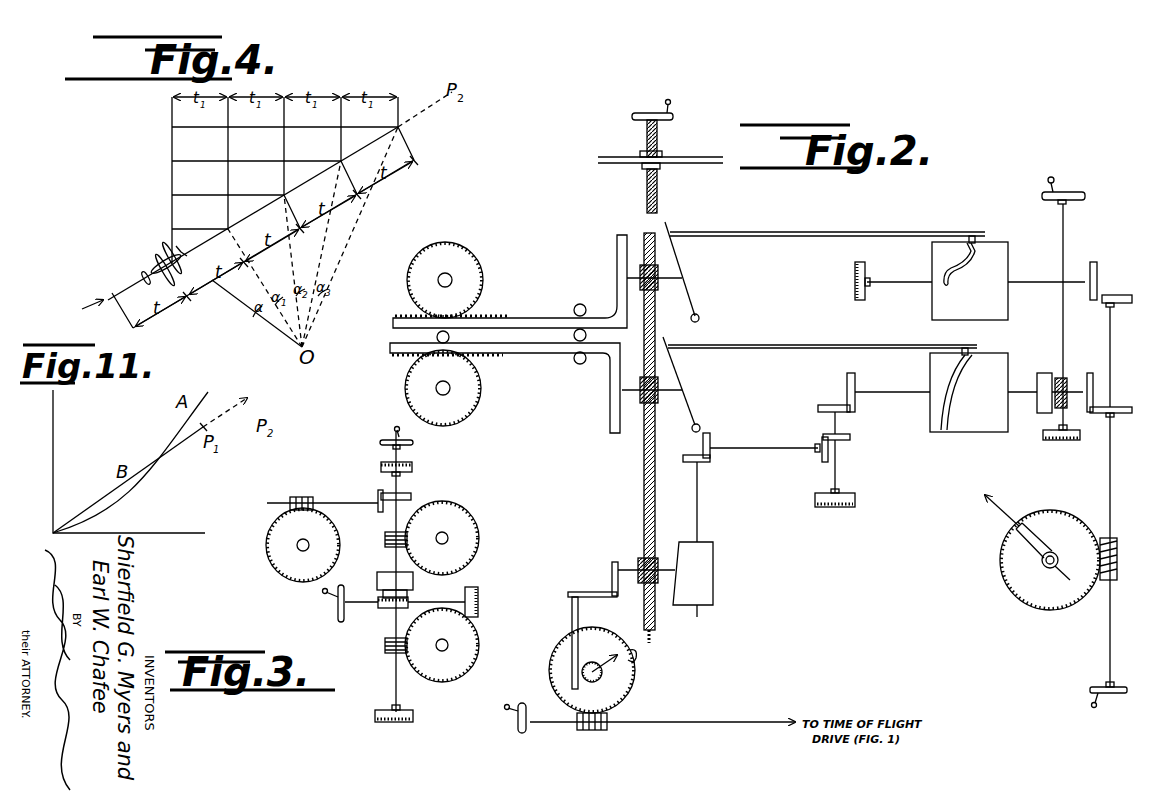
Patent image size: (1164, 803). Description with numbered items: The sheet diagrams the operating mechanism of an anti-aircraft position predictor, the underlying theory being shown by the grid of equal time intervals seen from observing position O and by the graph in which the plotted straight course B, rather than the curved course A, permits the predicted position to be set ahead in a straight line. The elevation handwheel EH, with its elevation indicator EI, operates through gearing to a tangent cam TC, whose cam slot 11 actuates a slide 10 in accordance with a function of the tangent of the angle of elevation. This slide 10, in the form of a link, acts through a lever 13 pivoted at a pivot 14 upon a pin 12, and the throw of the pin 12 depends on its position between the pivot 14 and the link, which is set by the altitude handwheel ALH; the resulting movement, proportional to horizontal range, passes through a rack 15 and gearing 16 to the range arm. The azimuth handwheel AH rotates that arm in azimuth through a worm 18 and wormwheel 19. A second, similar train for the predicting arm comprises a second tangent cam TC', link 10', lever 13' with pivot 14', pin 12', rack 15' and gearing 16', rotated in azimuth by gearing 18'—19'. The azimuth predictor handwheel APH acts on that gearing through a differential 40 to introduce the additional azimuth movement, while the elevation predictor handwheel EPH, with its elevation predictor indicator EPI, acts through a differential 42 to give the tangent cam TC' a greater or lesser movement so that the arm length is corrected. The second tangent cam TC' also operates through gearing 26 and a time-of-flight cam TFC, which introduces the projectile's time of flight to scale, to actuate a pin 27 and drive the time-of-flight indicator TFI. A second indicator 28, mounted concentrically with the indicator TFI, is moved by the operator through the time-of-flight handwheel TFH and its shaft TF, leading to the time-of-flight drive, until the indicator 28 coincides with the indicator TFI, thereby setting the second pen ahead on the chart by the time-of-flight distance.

In FIG. 2, the slide 10 is at (827, 225).
In FIG. 2, the link 10' is at (822, 338).
In FIG. 2, the cam slot 11 is at (962, 252).
In FIG. 2, the pin 12 is at (654, 291).
In FIG. 2, the pin 12' is at (652, 406).
In FIG. 2, the lever 13 is at (688, 269).
In FIG. 2, the lever 13' is at (694, 381).
In FIG. 2, the pivot 14 is at (712, 309).
In FIG. 2, the pivot 14' is at (719, 423).
In FIG. 2, the rack 15 is at (510, 289).
In FIG. 2, the rack 15' is at (505, 388).
In FIG. 2, the gearing 16 is at (447, 269).
In FIG. 2, the gearing 16' is at (443, 388).
In FIG. 3, the worm 18 is at (379, 543).
In FIG. 3, the worm 18' is at (383, 663).
In FIG. 3, the wormwheel 19 is at (459, 538).
In FIG. 3, the wormwheel 19' is at (442, 645).
In FIG. 2, the gearing 26 is at (872, 440).
In FIG. 2, the pin 27 is at (626, 563).
In FIG. 2, the second indicator 28 is at (636, 660).
In FIG. 3, the differential 40 is at (411, 584).
In FIG. 2, the differential 42 is at (1038, 373).
In FIG. 2, the altitude handwheel ALH is at (650, 121).
In FIG. 3, the azimuth handwheel AH is at (392, 429).
In FIG. 3, the azimuth predictor handwheel APH is at (385, 603).
In FIG. 2, the tangent cam TC is at (970, 281).
In FIG. 2, the second tangent cam TC' is at (969, 392).
In FIG. 2, the time-of-flight cam TFC is at (693, 579).
In FIG. 2, the time-of-flight indicator TFI is at (592, 670).
In FIG. 2, the time-of-flight drive shaft TF is at (702, 722).
In FIG. 2, the time-of-flight handwheel TFH is at (519, 733).
In FIG. 2, the elevation predictor handwheel EPH is at (1063, 295).
In FIG. 2, the elevation predictor indicator EPI is at (1061, 444).
In FIG. 2, the elevation indicator EI is at (1042, 552).
In FIG. 2, the elevation handwheel EH is at (1108, 701).